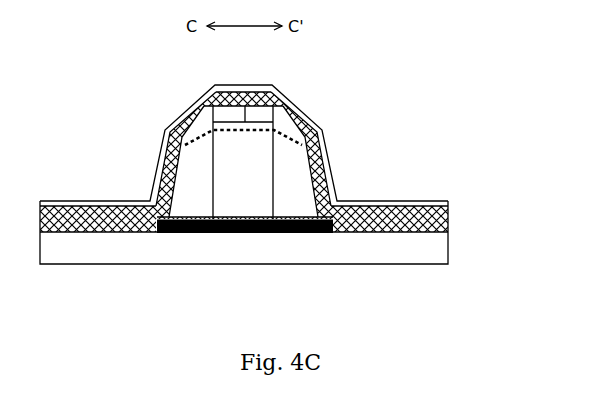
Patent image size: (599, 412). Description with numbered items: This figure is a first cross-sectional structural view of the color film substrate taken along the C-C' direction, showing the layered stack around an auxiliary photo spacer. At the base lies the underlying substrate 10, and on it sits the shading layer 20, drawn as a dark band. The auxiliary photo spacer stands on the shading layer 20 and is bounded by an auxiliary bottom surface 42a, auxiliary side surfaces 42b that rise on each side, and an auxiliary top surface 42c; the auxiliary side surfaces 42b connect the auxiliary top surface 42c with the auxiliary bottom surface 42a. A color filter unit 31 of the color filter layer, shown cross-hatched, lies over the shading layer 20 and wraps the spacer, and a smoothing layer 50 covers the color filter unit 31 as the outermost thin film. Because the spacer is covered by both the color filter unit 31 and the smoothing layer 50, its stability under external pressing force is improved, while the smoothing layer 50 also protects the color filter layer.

The underlying substrate 10 is at (435, 247).
The shading layer 20 is at (255, 233).
The color filter unit 31 is at (448, 226).
The auxiliary bottom surface 42a is at (263, 218).
The auxiliary side surfaces 42b is at (164, 173).
The auxiliary top surface 42c is at (240, 94).
The smoothing layer 50 is at (435, 203).